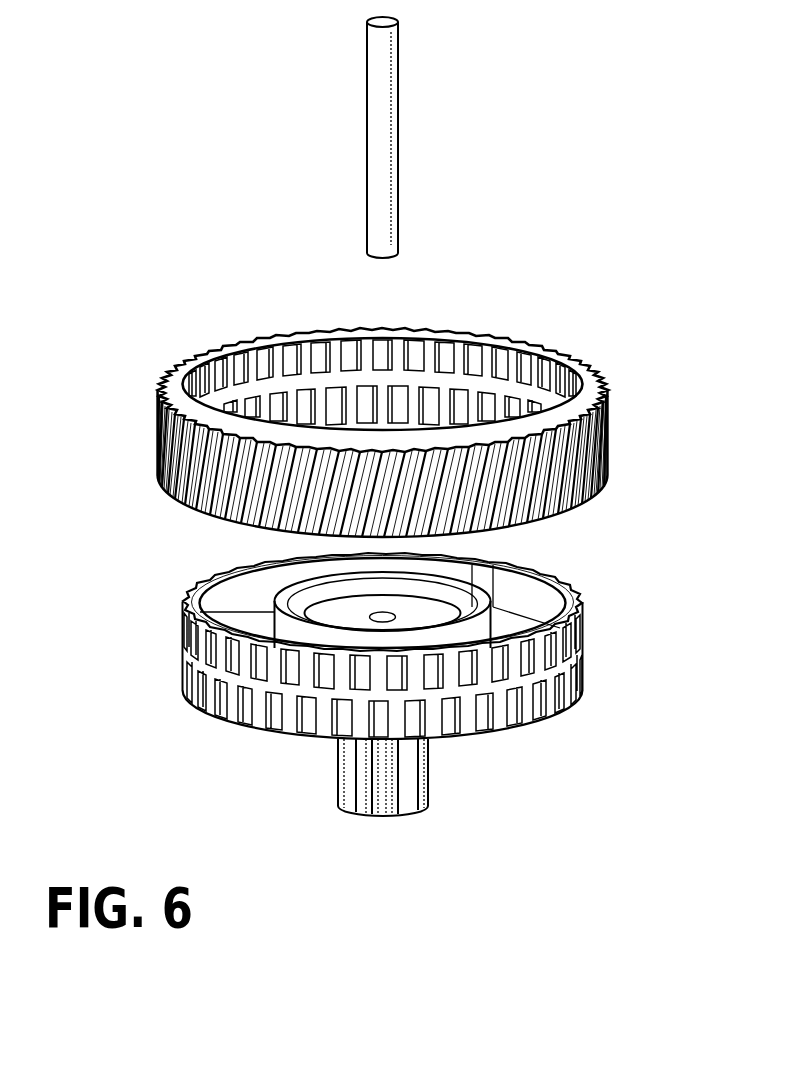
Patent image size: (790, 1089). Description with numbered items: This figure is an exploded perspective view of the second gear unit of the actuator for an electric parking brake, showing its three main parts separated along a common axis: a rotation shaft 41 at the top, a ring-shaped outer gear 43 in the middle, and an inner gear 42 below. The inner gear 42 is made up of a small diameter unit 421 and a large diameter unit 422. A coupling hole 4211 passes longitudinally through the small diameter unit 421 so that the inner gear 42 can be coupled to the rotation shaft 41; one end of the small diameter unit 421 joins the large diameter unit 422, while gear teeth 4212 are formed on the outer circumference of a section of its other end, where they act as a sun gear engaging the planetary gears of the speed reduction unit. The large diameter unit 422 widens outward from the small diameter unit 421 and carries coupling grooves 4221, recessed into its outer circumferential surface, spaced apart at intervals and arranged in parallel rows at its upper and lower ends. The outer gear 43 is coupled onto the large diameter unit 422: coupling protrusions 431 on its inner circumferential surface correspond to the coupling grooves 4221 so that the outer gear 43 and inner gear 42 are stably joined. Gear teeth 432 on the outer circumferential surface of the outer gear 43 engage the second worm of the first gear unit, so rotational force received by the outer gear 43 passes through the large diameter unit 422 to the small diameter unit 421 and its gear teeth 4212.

The rotation shaft 41 is at (375, 97).
The outer gear 43 is at (427, 380).
The coupling protrusions 431 is at (473, 350).
The gear teeth 432 is at (608, 415).
The inner gear 42 is at (357, 709).
The large diameter unit 422 is at (257, 620).
The coupling grooves 4221 is at (210, 706).
The coupling hole 4211 is at (385, 616).
The small diameter unit 421 is at (441, 829).
The gear teeth 4212 is at (430, 773).